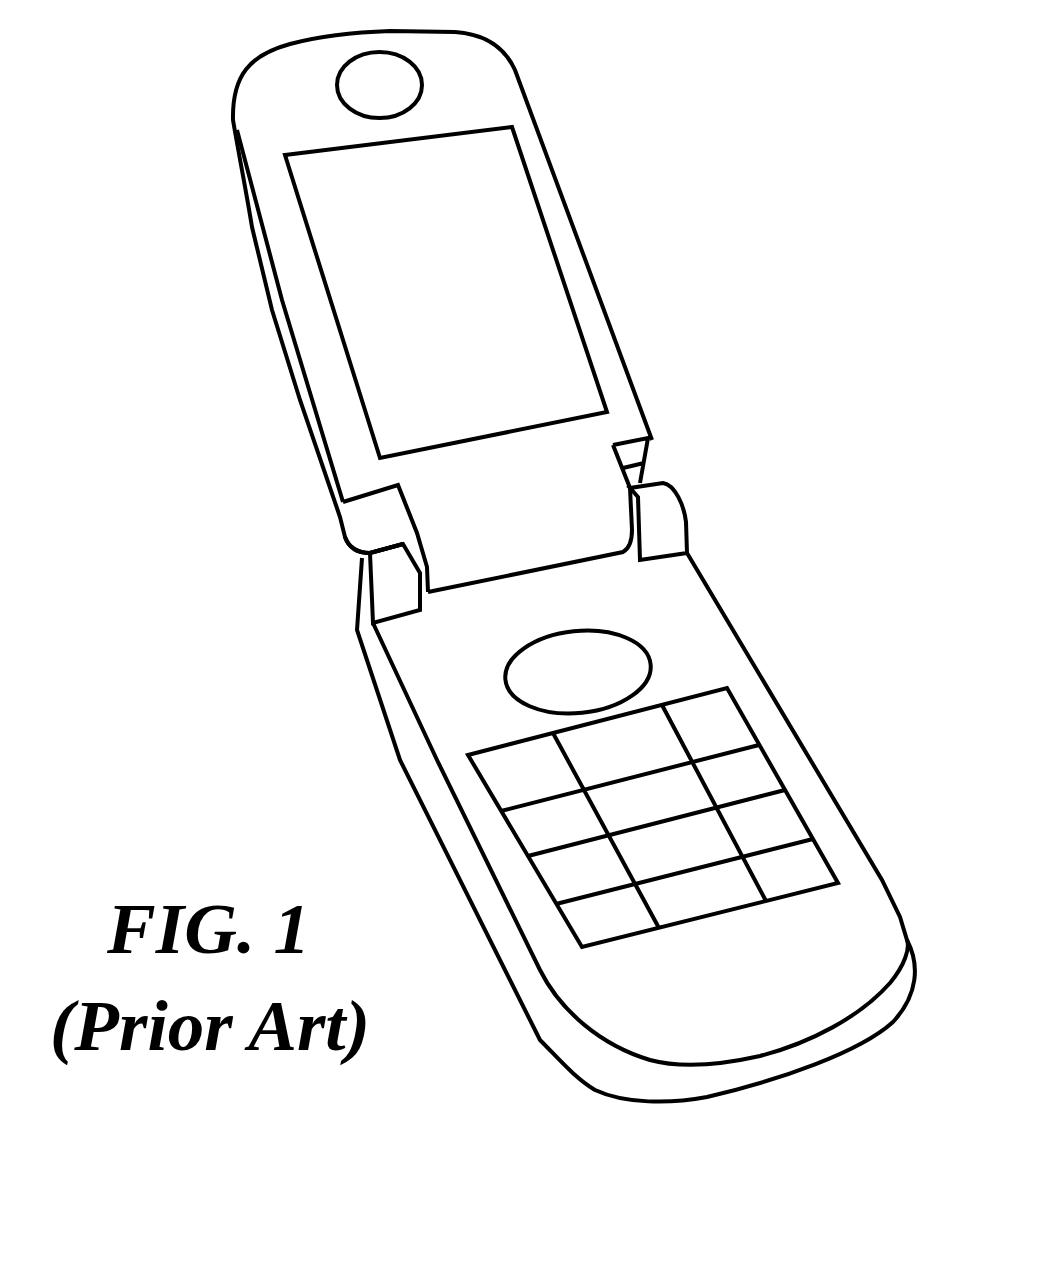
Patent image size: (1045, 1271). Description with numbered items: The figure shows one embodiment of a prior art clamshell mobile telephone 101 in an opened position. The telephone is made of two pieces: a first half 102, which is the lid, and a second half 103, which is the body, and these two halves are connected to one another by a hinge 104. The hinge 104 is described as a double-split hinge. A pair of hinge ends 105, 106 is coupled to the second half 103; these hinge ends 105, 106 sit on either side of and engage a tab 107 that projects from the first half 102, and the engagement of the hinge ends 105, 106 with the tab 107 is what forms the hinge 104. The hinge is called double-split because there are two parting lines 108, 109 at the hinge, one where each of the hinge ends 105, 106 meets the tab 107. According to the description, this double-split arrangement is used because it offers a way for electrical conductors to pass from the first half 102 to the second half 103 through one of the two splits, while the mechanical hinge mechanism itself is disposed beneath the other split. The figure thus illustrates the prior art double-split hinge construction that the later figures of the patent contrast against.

The clamshell mobile telephone 101 is at (199, 676).
The first half 102 is at (590, 272).
The second half 103 is at (817, 762).
The hinge 104 is at (370, 553).
The hinge end 105 is at (387, 582).
The hinge end 106 is at (662, 508).
The tab 107 is at (527, 518).
The parting line 108 is at (653, 458).
The parting line 109 is at (420, 557).